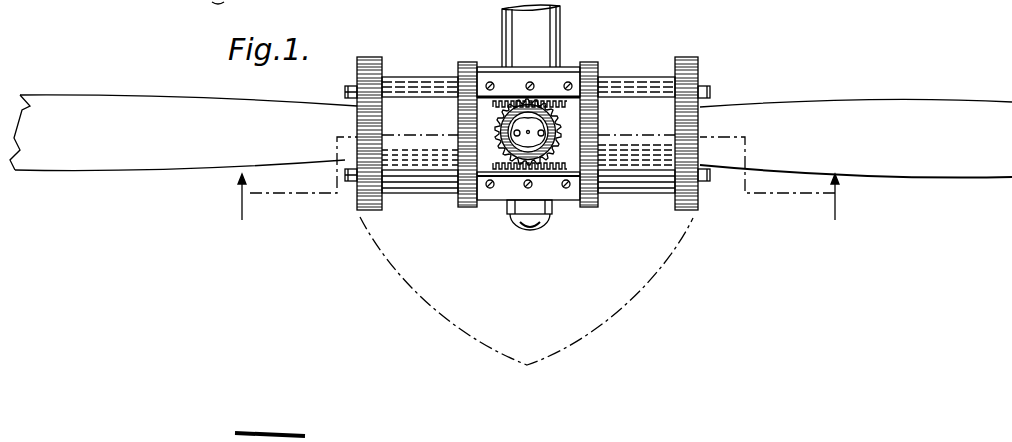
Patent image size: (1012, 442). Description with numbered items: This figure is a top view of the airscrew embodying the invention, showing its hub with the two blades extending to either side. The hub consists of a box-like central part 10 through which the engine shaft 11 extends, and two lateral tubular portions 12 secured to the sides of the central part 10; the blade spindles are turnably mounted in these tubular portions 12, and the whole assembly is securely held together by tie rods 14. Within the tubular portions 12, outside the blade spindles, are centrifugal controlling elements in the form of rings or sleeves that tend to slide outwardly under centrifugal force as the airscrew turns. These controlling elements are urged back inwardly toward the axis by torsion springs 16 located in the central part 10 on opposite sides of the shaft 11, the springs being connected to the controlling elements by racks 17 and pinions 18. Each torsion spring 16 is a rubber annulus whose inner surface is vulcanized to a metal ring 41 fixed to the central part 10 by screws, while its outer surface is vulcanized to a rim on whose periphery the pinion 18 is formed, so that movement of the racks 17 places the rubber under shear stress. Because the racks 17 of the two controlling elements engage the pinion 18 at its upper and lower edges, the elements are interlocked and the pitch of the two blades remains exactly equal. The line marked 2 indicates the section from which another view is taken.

The section line 2- 2 is at (533, 178).
The box-like central part 10 is at (454, 193).
The engine shaft 11 is at (540, 25).
The lateral tubular portions 12 is at (640, 160).
The tie rods 14 is at (548, 93).
The torsion springs 16 is at (546, 141).
The racks 17 is at (563, 111).
The pinion 18 is at (560, 126).
The metal ring 41 is at (505, 121).